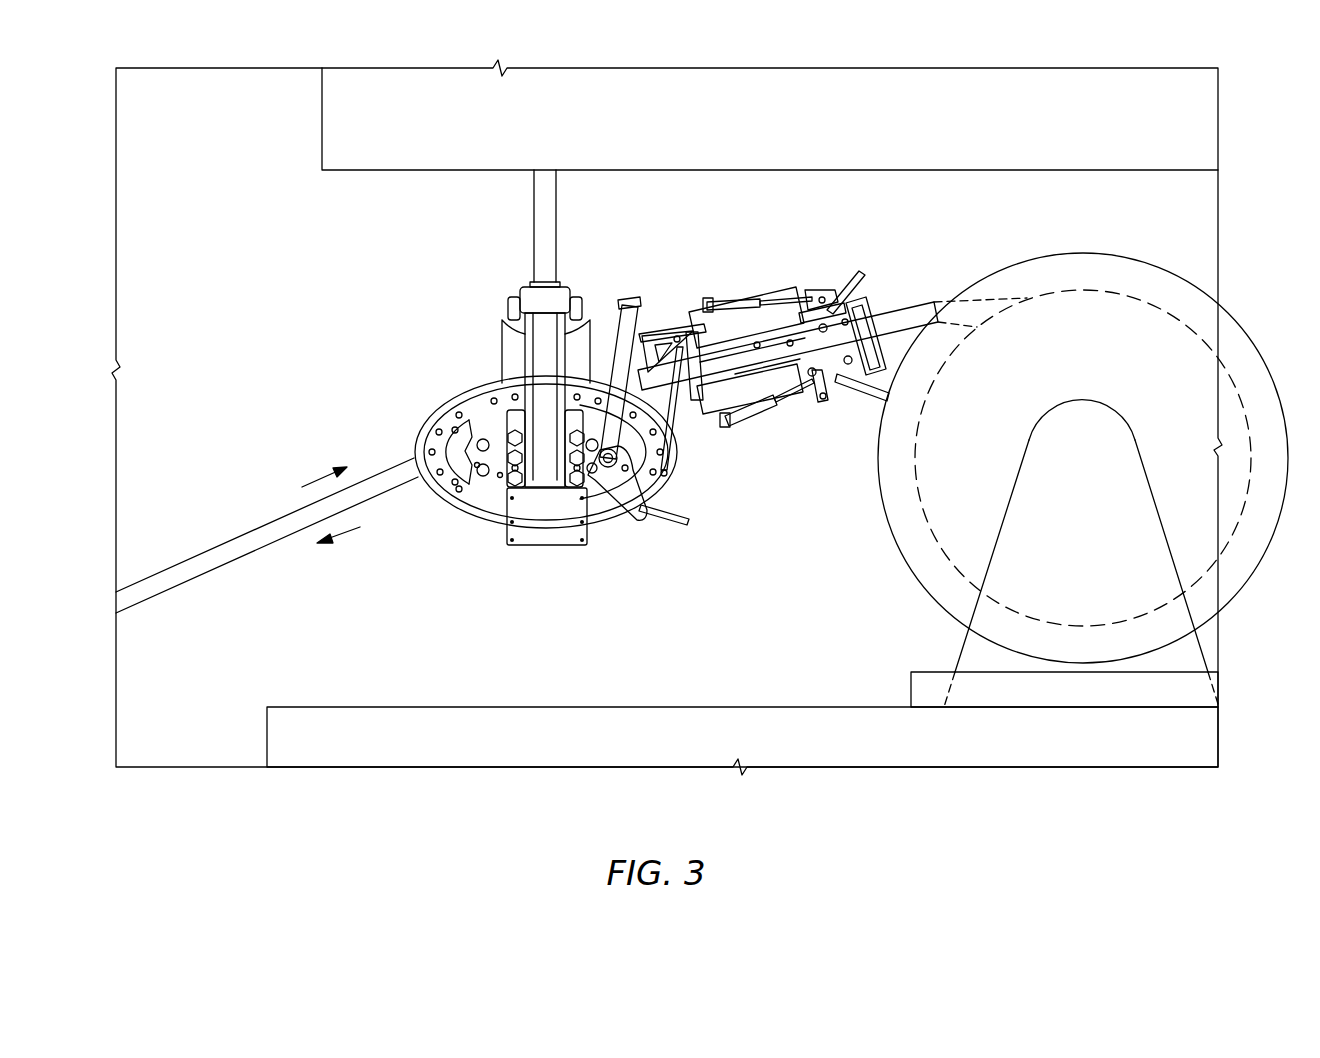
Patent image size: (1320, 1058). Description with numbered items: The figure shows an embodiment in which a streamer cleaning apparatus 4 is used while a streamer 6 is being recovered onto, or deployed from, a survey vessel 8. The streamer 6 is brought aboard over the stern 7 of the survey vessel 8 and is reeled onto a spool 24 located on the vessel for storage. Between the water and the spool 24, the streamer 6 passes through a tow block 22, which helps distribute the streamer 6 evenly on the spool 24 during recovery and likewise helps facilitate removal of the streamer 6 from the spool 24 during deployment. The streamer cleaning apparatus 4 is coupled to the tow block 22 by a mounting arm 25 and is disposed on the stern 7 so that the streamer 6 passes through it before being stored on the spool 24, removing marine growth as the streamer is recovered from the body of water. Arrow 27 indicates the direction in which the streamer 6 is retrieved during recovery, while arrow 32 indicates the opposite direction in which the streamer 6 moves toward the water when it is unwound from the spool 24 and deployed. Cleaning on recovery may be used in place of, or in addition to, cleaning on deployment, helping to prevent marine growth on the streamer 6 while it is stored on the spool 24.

The streamer cleaning apparatus 4 is at (757, 284).
The streamer 6 is at (247, 533).
The stern 7 is at (600, 706).
The survey vessel 8 is at (849, 746).
The tow block 22 is at (536, 357).
The spool 24 is at (1192, 283).
The mounting arm 25 is at (615, 333).
The arrow 27 is at (318, 480).
The arrow 32 is at (350, 527).